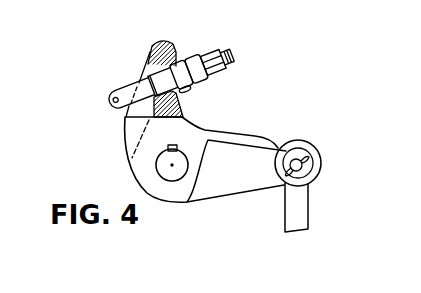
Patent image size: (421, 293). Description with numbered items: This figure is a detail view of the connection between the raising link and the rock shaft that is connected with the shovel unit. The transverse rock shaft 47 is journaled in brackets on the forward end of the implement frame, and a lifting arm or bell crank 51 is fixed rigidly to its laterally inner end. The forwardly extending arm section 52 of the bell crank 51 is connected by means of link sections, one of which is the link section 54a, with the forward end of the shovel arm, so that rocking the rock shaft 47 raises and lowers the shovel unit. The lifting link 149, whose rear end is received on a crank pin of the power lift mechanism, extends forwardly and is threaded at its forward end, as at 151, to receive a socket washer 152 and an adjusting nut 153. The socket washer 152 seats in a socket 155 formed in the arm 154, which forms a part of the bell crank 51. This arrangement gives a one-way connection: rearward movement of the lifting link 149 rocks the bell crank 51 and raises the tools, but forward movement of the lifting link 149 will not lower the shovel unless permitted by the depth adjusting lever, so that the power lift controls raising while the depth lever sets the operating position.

The rock shaft 47 is at (166, 167).
The lifting arm or bell crank 51 is at (236, 127).
The forwardly extending arm section 52 is at (240, 186).
The link section 54a is at (300, 213).
The lifting link 149 is at (113, 94).
The threaded forward end 151 is at (219, 55).
The socket washer 152 is at (160, 73).
The adjusting nut 153 is at (176, 62).
The arm 154 is at (135, 108).
The socket 155 is at (178, 93).